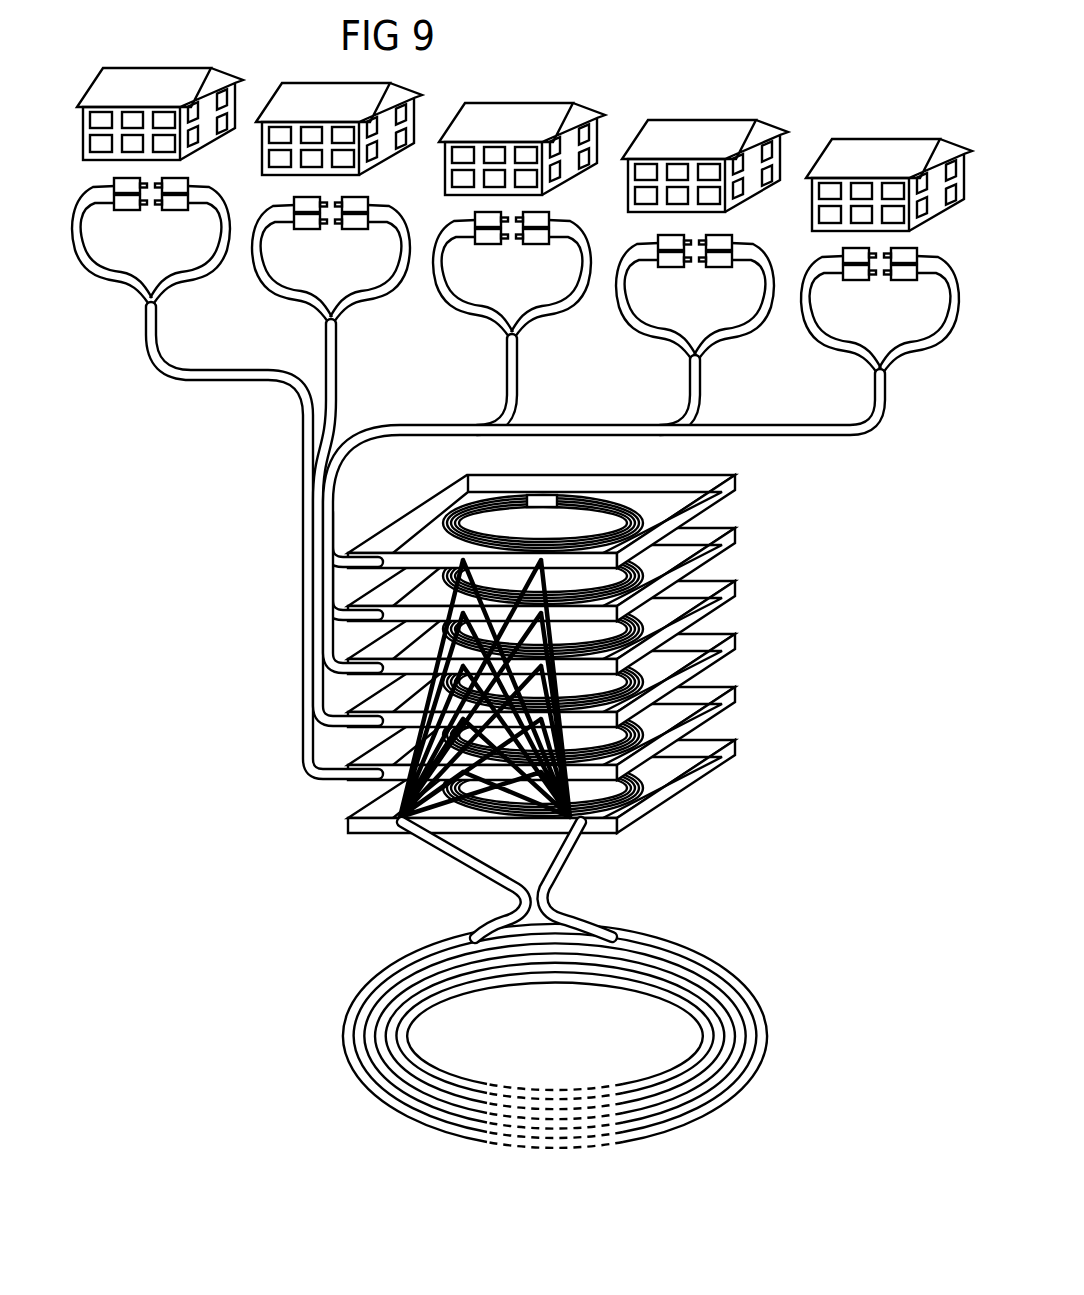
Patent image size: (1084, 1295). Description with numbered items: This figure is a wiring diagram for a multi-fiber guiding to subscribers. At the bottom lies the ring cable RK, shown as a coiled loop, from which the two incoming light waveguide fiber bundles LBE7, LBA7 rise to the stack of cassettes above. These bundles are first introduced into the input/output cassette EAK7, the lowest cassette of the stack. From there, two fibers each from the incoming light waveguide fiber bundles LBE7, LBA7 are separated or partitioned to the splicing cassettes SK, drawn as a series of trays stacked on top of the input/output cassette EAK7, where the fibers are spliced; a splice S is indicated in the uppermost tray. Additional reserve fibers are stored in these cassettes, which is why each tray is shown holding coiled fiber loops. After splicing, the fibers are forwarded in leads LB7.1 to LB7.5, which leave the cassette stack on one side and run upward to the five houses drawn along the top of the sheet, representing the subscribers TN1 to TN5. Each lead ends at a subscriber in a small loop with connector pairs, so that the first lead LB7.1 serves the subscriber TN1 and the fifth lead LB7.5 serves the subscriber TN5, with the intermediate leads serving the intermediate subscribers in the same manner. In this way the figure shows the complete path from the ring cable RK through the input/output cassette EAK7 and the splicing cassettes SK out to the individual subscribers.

The subscriber TN1 is at (172, 211).
The subscriber TN5 is at (897, 283).
The lead LB7.1 is at (190, 378).
The lead LB7.5 is at (848, 437).
The splice S is at (545, 497).
The splicing cassette SK is at (736, 490).
The input/output cassette EAK7 is at (677, 783).
The incoming light waveguide fiber bundle LBE7 is at (455, 857).
The incoming light waveguide fiber bundle LBA7 is at (563, 869).
The ring cable RK is at (768, 1034).